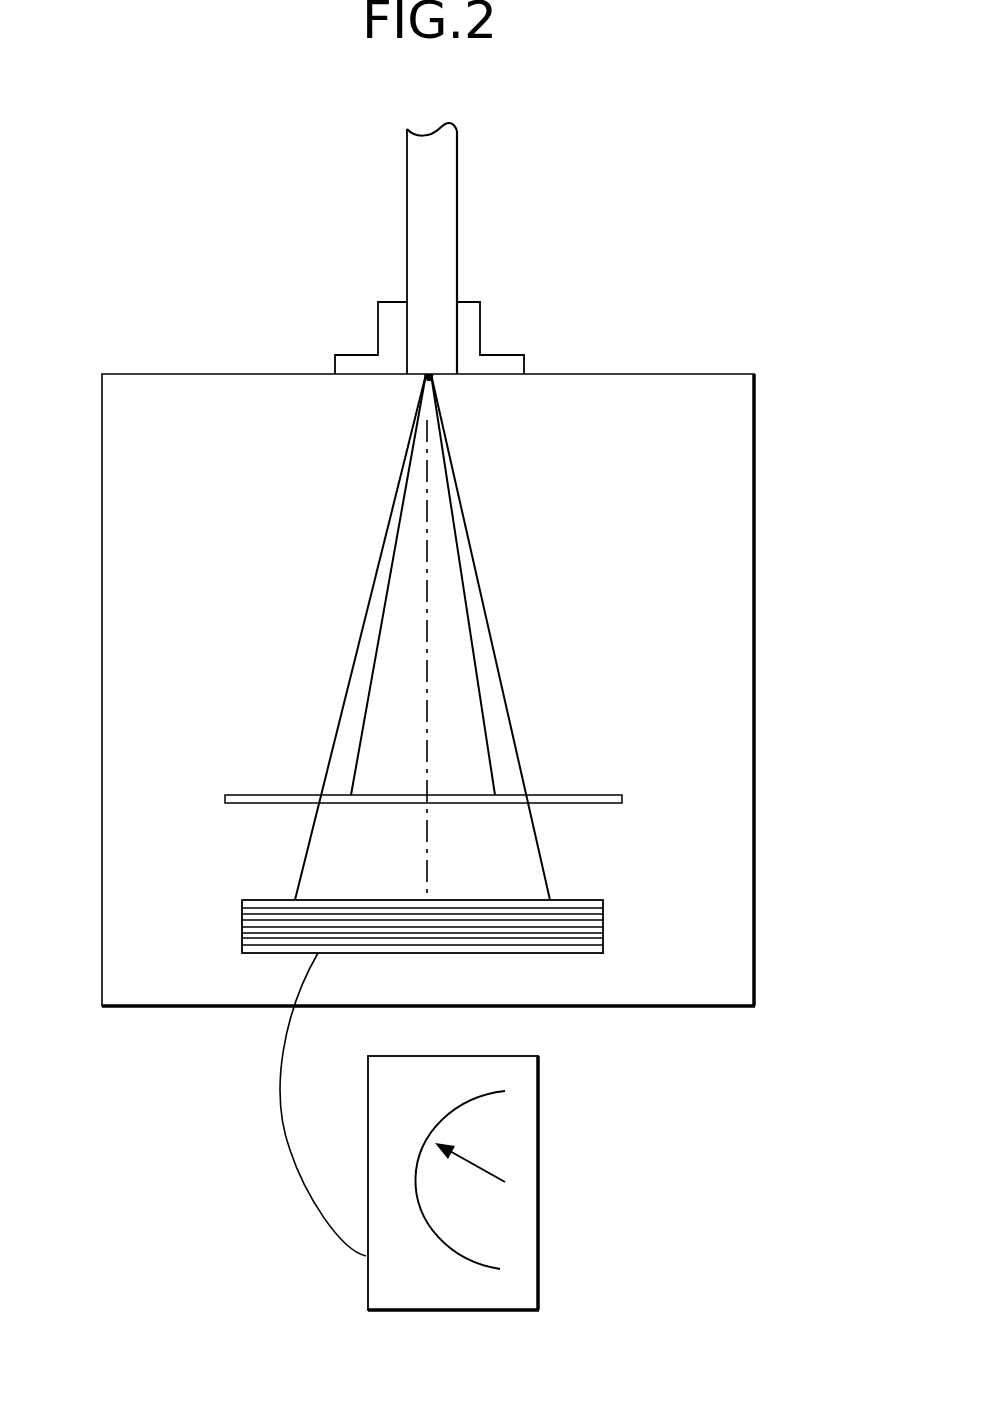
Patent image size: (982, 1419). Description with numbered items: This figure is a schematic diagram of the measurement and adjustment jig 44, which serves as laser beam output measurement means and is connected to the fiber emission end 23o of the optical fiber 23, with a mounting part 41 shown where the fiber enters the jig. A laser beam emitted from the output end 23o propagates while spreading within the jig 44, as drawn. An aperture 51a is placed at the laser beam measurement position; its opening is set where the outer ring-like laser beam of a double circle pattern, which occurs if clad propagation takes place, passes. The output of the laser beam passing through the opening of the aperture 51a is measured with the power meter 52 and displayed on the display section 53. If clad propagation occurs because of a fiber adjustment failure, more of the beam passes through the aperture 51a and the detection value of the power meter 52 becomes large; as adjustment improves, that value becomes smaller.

The optical fiber 23 is at (452, 215).
The fiber emission end 23o is at (434, 375).
The flange / mounting member 41 is at (474, 324).
The measurement and adjustment jig 44 is at (745, 561).
The aperture 51a is at (622, 800).
The power meter 52 is at (603, 925).
The display section 53 is at (538, 1190).